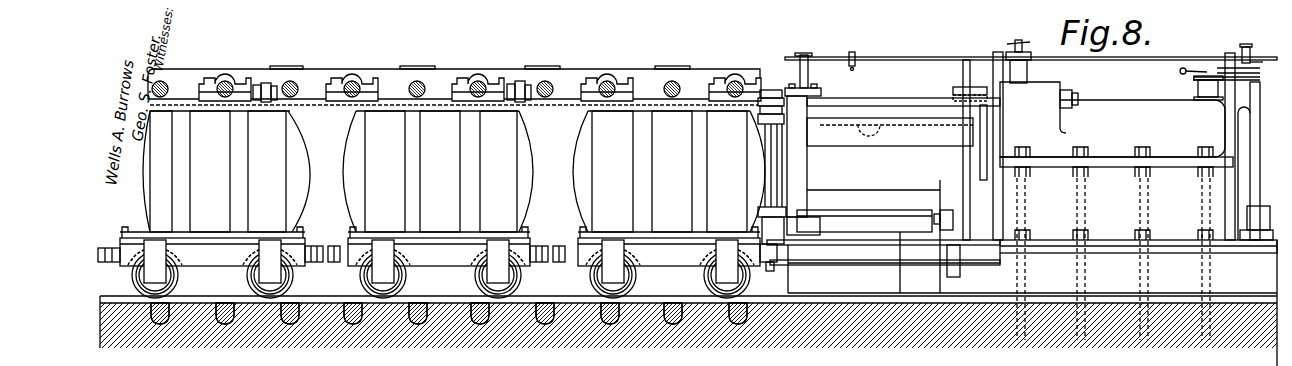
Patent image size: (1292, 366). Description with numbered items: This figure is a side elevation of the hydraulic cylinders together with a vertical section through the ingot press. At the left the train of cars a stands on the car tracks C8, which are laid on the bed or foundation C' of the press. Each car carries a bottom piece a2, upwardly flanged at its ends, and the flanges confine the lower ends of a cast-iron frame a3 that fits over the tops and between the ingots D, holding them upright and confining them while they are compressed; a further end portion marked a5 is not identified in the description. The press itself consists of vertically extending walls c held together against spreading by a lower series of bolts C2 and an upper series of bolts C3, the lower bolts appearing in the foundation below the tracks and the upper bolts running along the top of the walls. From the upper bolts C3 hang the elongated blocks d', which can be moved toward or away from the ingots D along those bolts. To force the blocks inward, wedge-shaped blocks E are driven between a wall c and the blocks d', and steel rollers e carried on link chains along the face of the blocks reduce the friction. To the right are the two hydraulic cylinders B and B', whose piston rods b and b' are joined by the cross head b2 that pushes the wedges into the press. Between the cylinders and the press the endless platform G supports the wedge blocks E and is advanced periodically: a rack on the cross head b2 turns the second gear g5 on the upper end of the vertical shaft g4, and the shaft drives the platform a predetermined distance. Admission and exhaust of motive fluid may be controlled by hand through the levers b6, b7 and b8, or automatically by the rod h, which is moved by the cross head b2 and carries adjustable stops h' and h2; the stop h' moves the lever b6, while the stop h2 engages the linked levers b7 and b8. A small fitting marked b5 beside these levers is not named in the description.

The walls c is at (448, 82).
The upper series of bolts C3 is at (350, 80).
The second series of elongated blocks d' is at (480, 88).
The ingots D is at (450, 171).
The car end bulge a5 is at (302, 172).
The frame a3 is at (532, 172).
The bottom piece a2 is at (211, 240).
The cars a is at (212, 256).
The car tracks C8 is at (326, 303).
The bed or foundation C' is at (688, 334).
The lower series of bolts C2 is at (227, 325).
The steel rollers e is at (780, 188).
The wedge-shaped blocks E is at (1031, 173).
The piston rod b is at (890, 141).
The piston rod b' is at (875, 202).
The cross head b2 is at (800, 182).
The platform G is at (878, 225).
The rod h is at (1031, 50).
The adjustable stop h' is at (863, 51).
The vertical shaft g4 is at (970, 56).
The second gear g5 is at (960, 88).
The lever b6 is at (1000, 52).
The hydraulic cylinder B is at (1116, 129).
The hydraulic cylinder B' is at (1138, 272).
The lever b7 is at (1186, 66).
The valve body b5 is at (1216, 84).
The lever b8 is at (1232, 56).
The adjustable stop h2 is at (1255, 58).